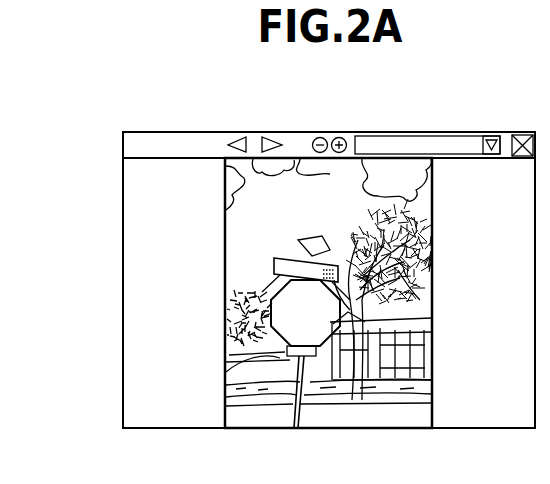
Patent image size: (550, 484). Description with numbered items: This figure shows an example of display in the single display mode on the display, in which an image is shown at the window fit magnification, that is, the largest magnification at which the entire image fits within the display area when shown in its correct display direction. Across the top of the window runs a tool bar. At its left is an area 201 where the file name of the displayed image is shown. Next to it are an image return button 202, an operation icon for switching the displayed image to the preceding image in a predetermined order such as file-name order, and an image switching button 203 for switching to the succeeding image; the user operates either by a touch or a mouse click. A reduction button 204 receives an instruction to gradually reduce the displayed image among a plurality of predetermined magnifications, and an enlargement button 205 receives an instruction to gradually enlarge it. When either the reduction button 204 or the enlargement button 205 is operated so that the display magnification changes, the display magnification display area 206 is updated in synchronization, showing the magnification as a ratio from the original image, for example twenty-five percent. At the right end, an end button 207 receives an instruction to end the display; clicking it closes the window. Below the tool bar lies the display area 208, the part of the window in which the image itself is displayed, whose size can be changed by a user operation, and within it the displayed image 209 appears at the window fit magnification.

The area 201 is at (165, 132).
The image return button 202 is at (236, 132).
The image switching button 203 is at (272, 132).
The reduction button 204 is at (313, 132).
The enlargement button 205 is at (343, 132).
The display magnification display area 206 is at (460, 140).
The end button 207 is at (520, 132).
The display area 208 is at (123, 202).
The displayed image 209 is at (228, 257).